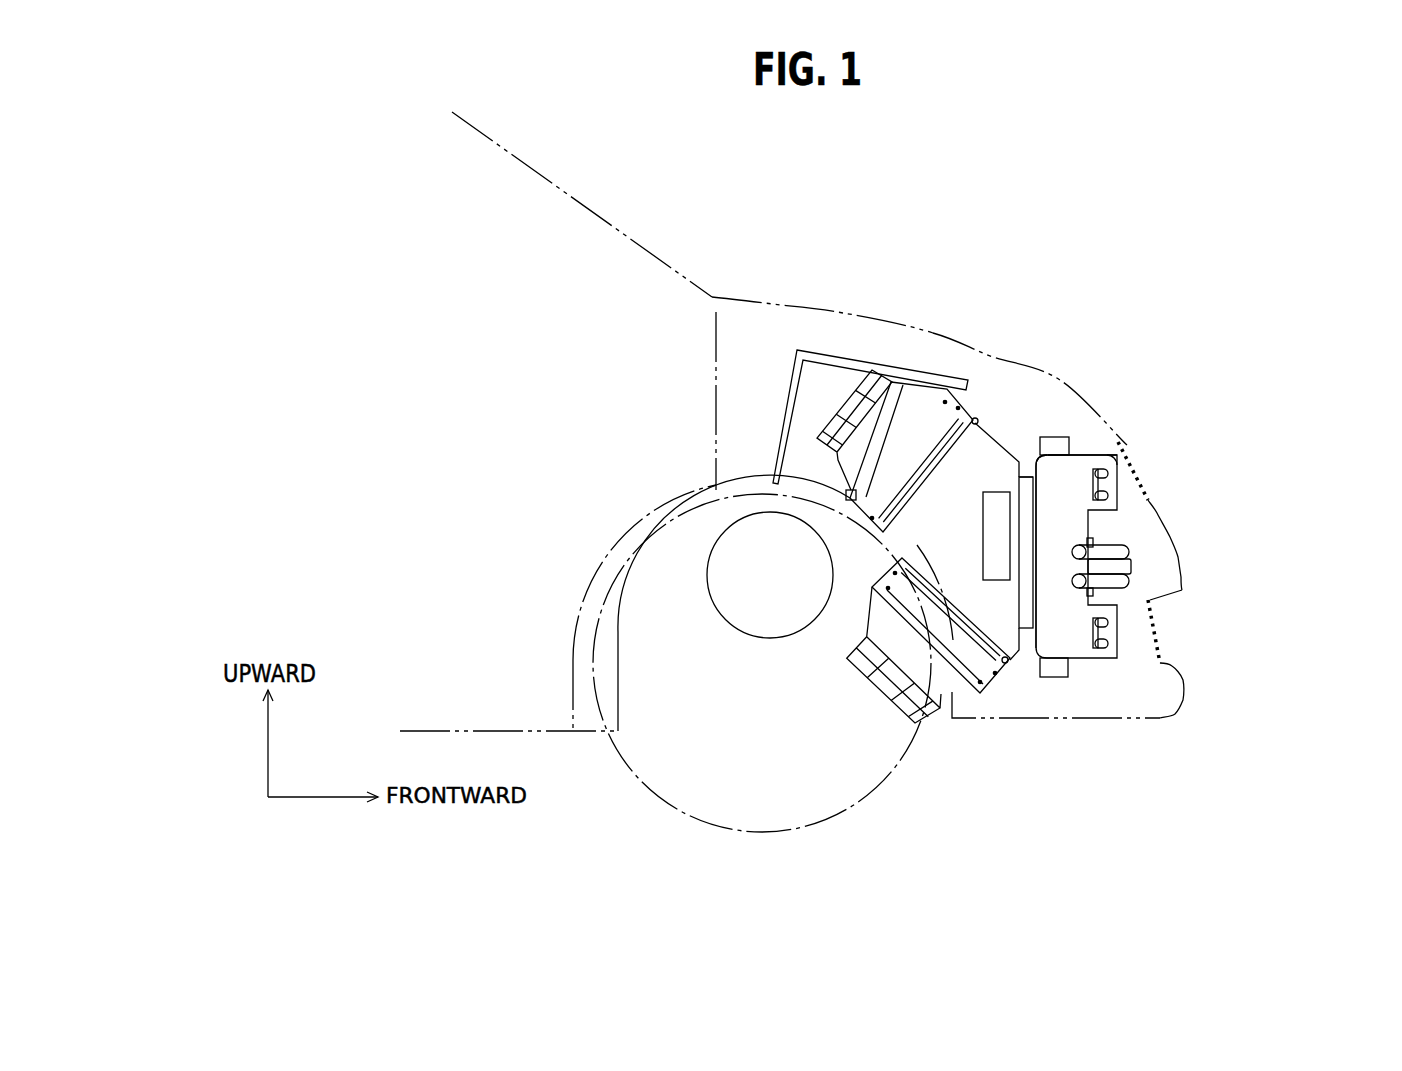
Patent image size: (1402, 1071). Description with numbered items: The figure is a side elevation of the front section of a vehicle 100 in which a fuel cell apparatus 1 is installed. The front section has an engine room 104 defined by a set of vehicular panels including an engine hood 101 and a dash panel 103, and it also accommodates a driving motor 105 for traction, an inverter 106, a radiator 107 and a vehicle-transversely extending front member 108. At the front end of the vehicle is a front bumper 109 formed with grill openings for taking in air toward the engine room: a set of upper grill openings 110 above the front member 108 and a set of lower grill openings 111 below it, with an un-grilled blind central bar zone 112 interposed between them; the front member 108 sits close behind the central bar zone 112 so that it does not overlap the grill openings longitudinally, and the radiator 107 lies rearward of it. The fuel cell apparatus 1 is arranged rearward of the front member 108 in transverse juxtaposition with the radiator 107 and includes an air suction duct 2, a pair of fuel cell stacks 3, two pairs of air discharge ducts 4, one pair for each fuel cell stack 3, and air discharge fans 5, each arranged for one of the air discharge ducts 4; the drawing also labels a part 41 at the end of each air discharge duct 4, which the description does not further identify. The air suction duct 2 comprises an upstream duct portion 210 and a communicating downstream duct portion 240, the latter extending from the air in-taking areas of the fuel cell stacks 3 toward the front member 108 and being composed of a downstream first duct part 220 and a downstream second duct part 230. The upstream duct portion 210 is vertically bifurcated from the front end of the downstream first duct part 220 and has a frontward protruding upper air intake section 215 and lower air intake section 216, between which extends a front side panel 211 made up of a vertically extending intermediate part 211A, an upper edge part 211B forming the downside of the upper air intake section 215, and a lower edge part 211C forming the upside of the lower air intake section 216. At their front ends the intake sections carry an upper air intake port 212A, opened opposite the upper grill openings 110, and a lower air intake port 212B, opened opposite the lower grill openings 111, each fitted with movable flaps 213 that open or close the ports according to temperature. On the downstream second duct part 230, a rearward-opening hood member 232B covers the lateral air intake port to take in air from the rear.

The vehicle 100 is at (640, 192).
The engine hood 101 is at (933, 330).
The dash panel 103 is at (714, 437).
The engine room 104 is at (772, 343).
The driving motor 105 is at (707, 578).
The inverter 106 is at (840, 352).
The radiator 107 is at (1083, 453).
The front member 108 is at (1130, 560).
The front bumper 109 is at (1185, 570).
The upper grill openings 110 is at (1145, 475).
The lower grill openings 111 is at (1160, 663).
The central bar zone 112 is at (1183, 584).
The fuel cell apparatus 1 is at (1090, 363).
The air suction duct 2 is at (1053, 440).
The fuel cell stack 3 is at (1002, 433).
The air discharge duct 4 is at (913, 382).
The connector 41 is at (875, 378).
The air discharge fan 5 is at (840, 400).
The upstream duct portion 210 is at (1094, 522).
The front side panel 211 is at (1090, 603).
The intermediate part 211A is at (1078, 559).
The upper edge part 211B is at (1105, 512).
The lower edge part 211C is at (1113, 619).
The upper air intake port 212A is at (1118, 455).
The lower air intake port 212B is at (1110, 645).
The movable flap 213 is at (1108, 500).
The upper air intake section 215 is at (1112, 455).
The lower air intake section 216 is at (1099, 664).
The downstream first duct part 220 is at (1042, 427).
The downstream second duct part 230 is at (1027, 466).
The downstream duct portion 240 is at (1107, 275).
The hood member 232B is at (983, 542).